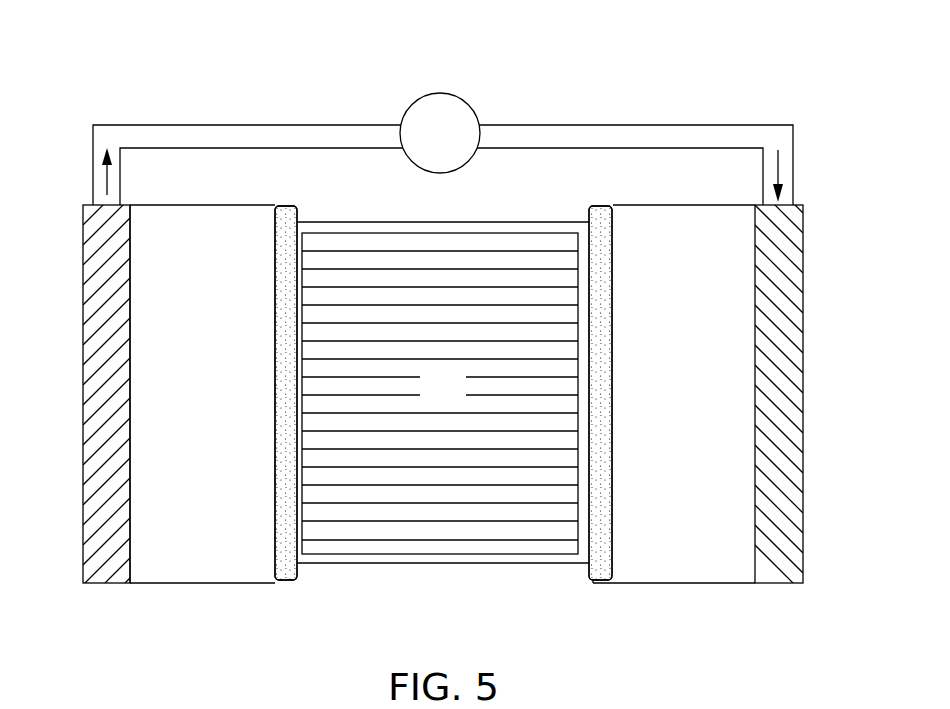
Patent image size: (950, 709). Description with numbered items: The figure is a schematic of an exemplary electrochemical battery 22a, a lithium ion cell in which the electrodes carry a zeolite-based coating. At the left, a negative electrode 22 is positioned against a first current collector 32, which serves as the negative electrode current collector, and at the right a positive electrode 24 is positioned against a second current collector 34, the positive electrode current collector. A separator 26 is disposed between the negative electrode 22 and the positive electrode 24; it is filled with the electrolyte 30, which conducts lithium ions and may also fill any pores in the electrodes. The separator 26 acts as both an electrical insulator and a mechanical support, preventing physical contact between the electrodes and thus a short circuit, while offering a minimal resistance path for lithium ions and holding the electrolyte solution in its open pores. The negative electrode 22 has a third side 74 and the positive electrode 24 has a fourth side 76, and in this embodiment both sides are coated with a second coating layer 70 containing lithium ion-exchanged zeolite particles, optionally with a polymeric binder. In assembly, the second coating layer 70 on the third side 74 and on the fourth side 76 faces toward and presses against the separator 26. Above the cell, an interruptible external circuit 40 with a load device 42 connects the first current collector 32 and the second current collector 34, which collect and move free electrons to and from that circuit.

The battery 22a is at (114, 72).
The external circuit 40 is at (203, 124).
The load device 42 is at (455, 147).
The first current collector 32 is at (82, 300).
The second current collector 34 is at (803, 302).
The negative electrode 22 is at (219, 363).
The positive electrode 24 is at (692, 363).
The third side 74 is at (275, 550).
The second coating layer 70 is at (298, 553).
The fourth side 76 is at (613, 556).
The separator 26 is at (433, 564).
The electrolyte 30 is at (457, 390).